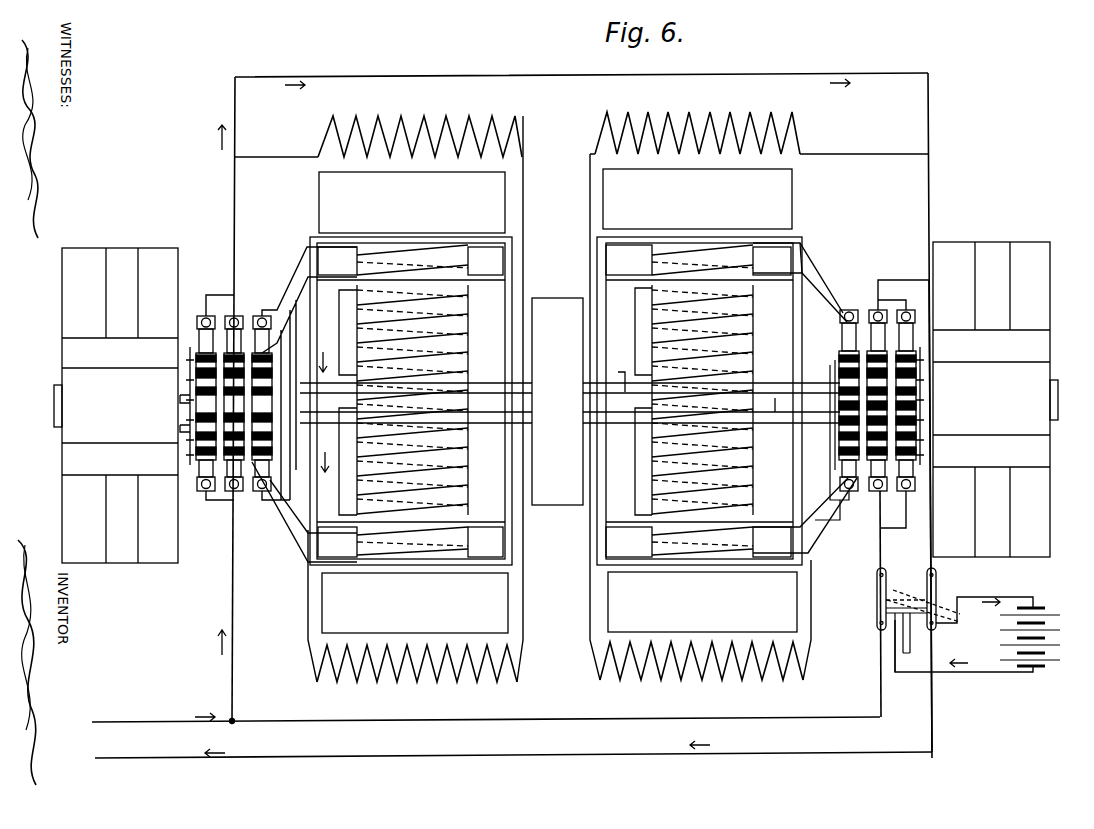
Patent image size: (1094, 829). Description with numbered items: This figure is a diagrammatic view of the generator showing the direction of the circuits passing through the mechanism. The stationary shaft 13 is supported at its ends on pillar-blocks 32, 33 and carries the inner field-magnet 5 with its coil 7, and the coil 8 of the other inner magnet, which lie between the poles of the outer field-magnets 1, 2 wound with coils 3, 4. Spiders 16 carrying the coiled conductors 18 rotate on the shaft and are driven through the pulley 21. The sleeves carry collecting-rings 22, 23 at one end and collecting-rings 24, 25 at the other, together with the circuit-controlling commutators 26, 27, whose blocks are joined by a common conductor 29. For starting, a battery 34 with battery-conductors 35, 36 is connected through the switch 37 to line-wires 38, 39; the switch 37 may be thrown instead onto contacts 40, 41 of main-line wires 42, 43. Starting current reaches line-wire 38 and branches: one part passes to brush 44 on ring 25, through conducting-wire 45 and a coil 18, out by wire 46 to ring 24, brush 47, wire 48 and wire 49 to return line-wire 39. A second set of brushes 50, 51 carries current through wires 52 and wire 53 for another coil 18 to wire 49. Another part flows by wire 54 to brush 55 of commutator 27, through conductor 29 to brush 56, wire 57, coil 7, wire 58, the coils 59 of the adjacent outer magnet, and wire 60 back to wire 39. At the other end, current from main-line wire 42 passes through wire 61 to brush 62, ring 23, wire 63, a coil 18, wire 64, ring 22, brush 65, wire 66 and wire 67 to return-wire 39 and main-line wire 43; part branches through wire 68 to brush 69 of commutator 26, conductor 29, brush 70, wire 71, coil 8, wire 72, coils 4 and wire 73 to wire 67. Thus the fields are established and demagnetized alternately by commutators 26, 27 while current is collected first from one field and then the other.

The outer field-magnet 1 is at (700, 357).
The outer field-magnet 2 is at (437, 190).
The coil 3 is at (671, 115).
The coil 4 is at (400, 118).
The inner field-magnet 5 is at (650, 336).
The coil 7 is at (755, 298).
The coil 8 is at (470, 352).
The shaft 13 is at (56, 400).
The spider 16 is at (770, 526).
The conductor 18 is at (386, 252).
The pulley 21 is at (570, 401).
The collecting-ring 22 is at (262, 406).
The collecting-ring 23 is at (234, 406).
The collecting-ring 24 is at (838, 352).
The collecting-ring 25 is at (890, 432).
The commutator 26 is at (206, 406).
The commutator 27 is at (931, 405).
The common conductor 29 is at (190, 412).
The pillar-block 32 is at (1022, 248).
The pillar-block 33 is at (80, 258).
The battery 34 is at (1050, 646).
The battery-conductor 35 is at (1000, 672).
The battery-conductor 36 is at (968, 612).
The switch 37 is at (887, 593).
The line-wire 38 is at (880, 562).
The line-wire 39 is at (930, 230).
The contact 40 is at (879, 626).
The contact 41 is at (933, 628).
The main-line wire 42 is at (128, 722).
The main-line wire 43 is at (140, 757).
The brush 44 is at (882, 491).
The conducting-wire 45 is at (843, 522).
The wire 46 is at (830, 488).
The brush 47 is at (849, 492).
The wire 48 is at (835, 360).
The wire 49 is at (884, 280).
The brush 50 is at (850, 309).
The brush 51 is at (874, 309).
The wire 52 is at (775, 280).
The wire 53 is at (818, 268).
The wire 54 is at (892, 296).
The brush 55 is at (908, 309).
The brush 56 is at (912, 465).
The wire 57 is at (908, 515).
The wire 58 is at (811, 620).
The coil 59 is at (792, 115).
The wire 60 is at (872, 154).
The wire 61 is at (233, 600).
The brush 62 is at (232, 494).
The wire 63 is at (292, 538).
The wire 64 is at (290, 510).
The brush 65 is at (256, 496).
The wire 66 is at (248, 308).
The wire 67 is at (505, 77).
The wire 68 is at (206, 294).
The brush 69 is at (197, 320).
The brush 70 is at (200, 477).
The wire 71 is at (206, 498).
The wire 72 is at (334, 358).
The wire 73 is at (276, 157).